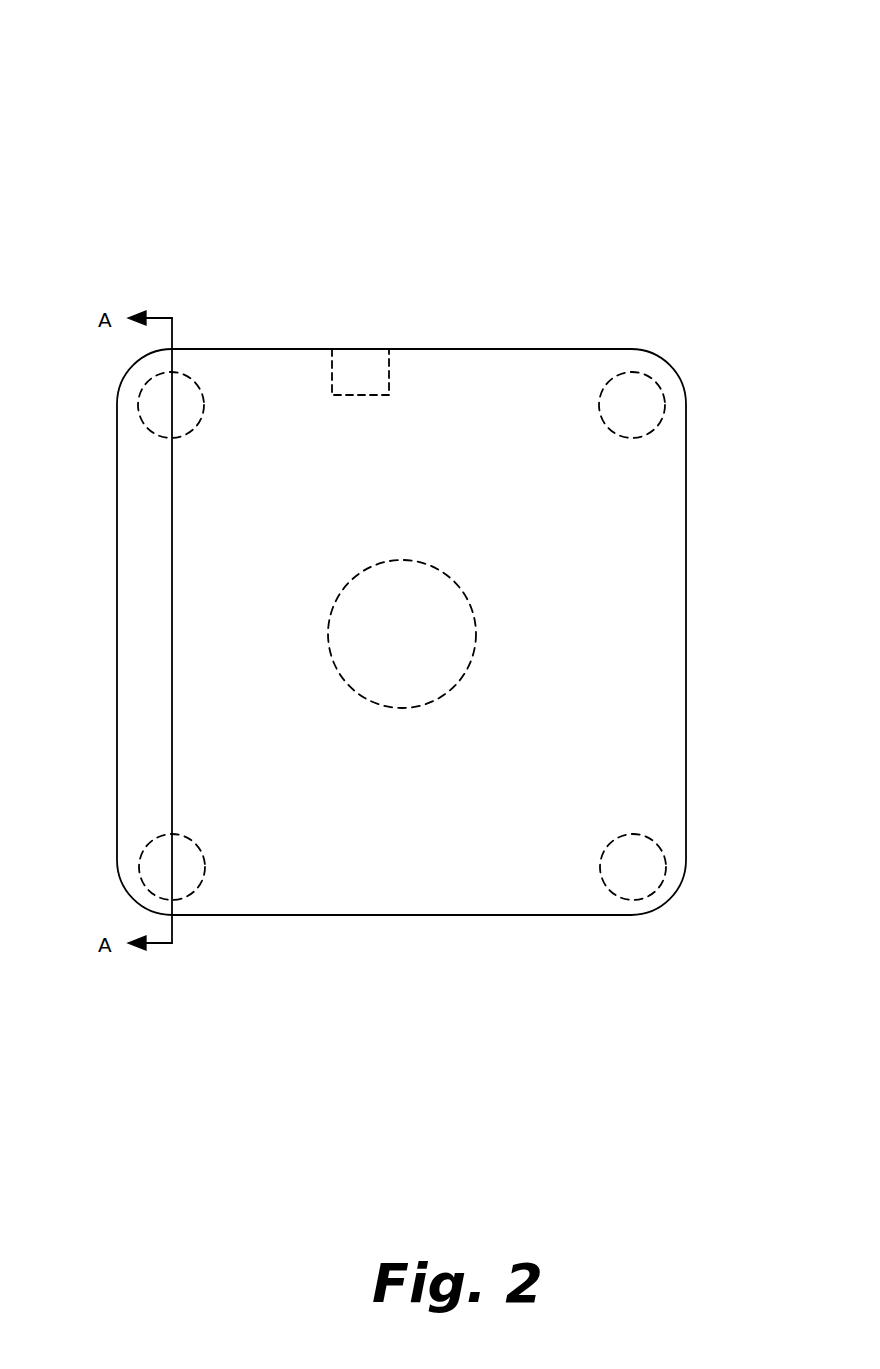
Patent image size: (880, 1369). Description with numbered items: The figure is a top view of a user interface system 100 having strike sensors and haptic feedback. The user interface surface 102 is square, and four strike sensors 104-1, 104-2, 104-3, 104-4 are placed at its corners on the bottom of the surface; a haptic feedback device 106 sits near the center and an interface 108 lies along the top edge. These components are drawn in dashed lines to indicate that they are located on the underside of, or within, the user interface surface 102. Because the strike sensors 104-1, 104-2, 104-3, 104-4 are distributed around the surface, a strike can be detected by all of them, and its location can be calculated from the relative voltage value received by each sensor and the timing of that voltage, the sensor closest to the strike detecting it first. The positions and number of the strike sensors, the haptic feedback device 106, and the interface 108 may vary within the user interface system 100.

The user interface system 100 is at (207, 93).
The user interface surface 102 is at (519, 349).
The strike sensor 104-1 is at (155, 413).
The strike sensor 104-2 is at (647, 398).
The strike sensor 104-3 is at (155, 865).
The strike sensor 104-4 is at (633, 880).
The haptic feedback device 106 is at (452, 663).
The interface 108 is at (360, 362).